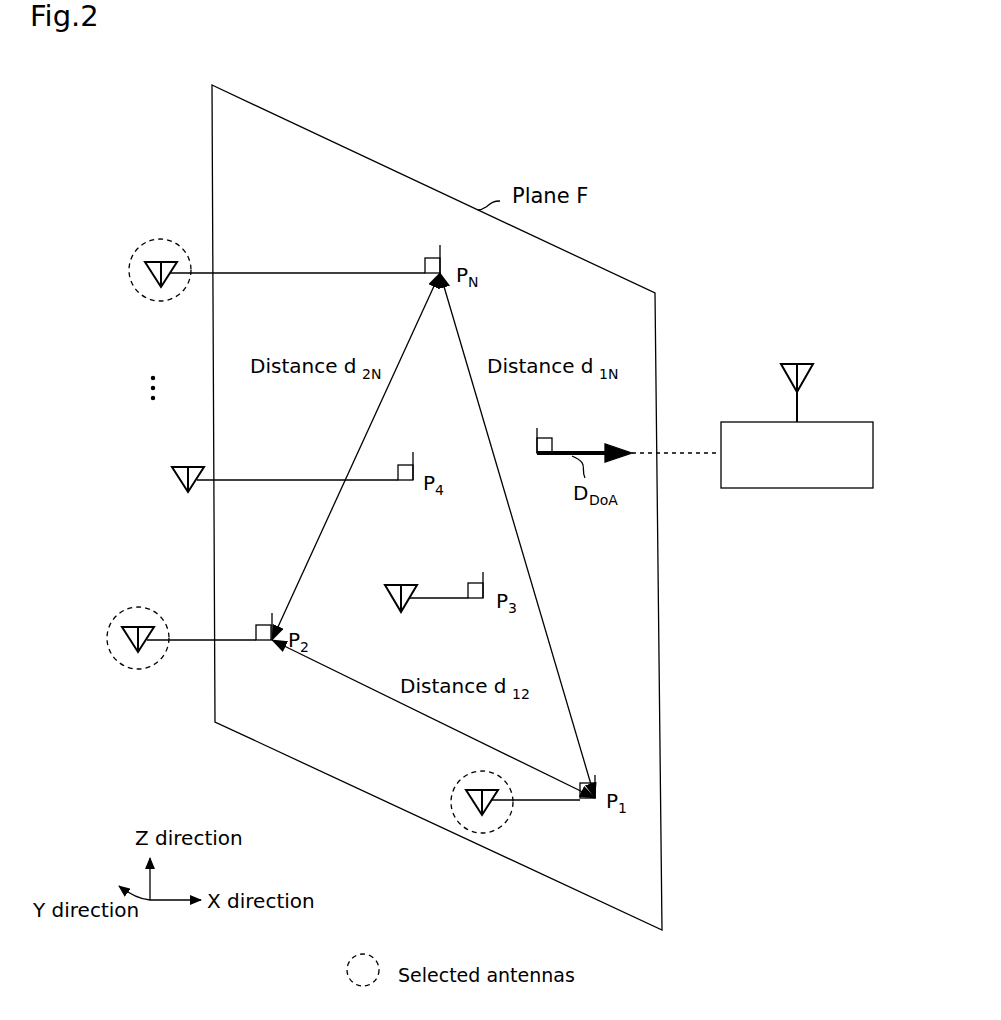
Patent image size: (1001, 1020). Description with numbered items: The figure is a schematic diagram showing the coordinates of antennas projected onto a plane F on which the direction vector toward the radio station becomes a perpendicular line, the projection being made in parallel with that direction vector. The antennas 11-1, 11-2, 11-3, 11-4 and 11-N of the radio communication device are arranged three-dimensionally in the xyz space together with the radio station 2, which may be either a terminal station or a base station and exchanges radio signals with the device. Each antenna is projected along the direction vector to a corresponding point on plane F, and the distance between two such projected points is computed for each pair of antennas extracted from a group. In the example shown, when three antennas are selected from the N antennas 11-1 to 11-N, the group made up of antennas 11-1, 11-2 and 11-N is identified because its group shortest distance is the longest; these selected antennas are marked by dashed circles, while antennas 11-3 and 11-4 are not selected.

The antenna 11-N is at (150, 280).
The antenna 11-4 is at (174, 483).
The antenna 11-3 is at (394, 586).
The antenna 11-2 is at (124, 644).
The antenna 11-1 is at (469, 791).
The radio station 2 is at (830, 422).